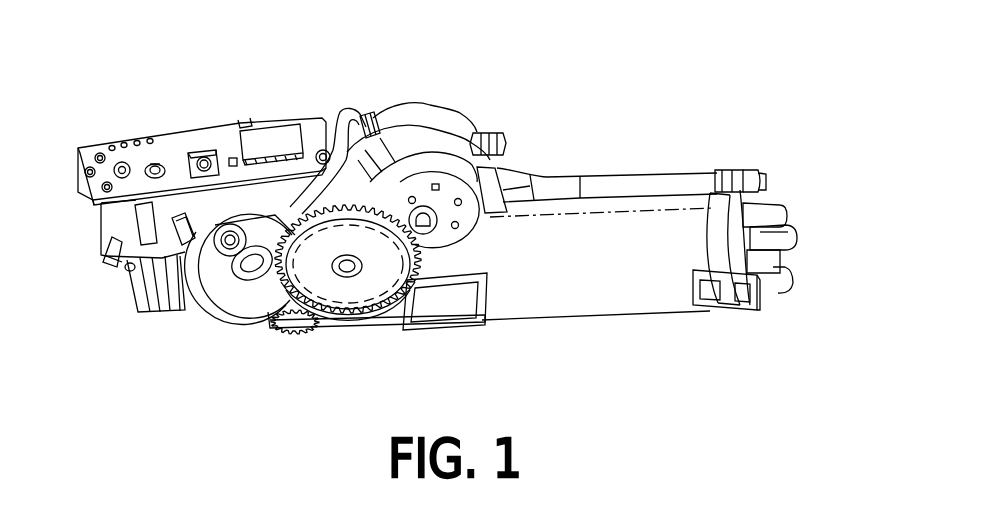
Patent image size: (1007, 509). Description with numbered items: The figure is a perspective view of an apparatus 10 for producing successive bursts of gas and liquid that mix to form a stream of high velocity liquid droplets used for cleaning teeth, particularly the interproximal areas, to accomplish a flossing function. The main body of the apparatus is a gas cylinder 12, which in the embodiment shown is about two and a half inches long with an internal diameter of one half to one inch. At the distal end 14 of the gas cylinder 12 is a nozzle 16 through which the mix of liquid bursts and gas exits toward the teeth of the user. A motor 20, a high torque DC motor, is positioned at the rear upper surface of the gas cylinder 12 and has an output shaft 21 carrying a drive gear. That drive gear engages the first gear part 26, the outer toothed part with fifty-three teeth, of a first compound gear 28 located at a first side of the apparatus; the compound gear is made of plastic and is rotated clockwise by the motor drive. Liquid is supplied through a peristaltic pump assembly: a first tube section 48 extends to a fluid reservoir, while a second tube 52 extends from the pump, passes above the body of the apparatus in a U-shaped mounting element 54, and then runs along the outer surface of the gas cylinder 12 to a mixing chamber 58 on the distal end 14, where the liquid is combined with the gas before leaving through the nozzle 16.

The apparatus 10 is at (627, 90).
The gas cylinder 12 is at (570, 300).
The distal end 14 is at (793, 298).
The nozzle 16 is at (800, 237).
The motor 20 is at (437, 117).
The output shaft 21 is at (433, 226).
The first gear part 26 is at (343, 293).
The first compound gear 28 is at (312, 320).
The first tube section 48 is at (467, 137).
The second tube 52 is at (680, 183).
The U-shaped mounting element 54 is at (373, 117).
The mixing chamber 58 is at (781, 212).